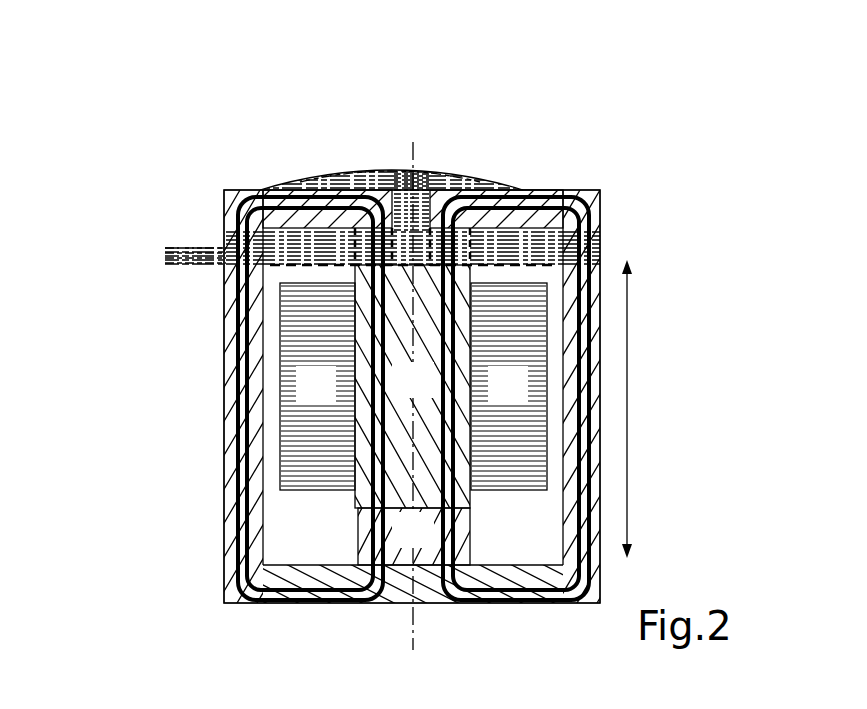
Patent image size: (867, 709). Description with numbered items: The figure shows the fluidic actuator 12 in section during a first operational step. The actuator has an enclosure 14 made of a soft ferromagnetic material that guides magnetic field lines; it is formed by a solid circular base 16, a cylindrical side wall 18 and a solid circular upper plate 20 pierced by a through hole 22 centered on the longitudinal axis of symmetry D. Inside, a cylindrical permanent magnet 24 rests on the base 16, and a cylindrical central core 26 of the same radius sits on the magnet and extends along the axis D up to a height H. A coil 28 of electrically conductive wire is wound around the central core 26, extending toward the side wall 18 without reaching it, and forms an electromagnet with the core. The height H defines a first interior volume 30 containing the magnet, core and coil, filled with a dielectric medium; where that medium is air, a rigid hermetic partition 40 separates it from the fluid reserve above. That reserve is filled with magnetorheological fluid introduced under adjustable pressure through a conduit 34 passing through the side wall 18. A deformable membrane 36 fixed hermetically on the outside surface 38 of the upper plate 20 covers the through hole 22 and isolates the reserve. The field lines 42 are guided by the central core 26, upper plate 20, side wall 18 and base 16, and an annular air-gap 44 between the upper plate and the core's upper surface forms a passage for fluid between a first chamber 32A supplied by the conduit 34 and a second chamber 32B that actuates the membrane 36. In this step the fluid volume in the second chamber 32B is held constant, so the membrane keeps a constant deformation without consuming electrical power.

The fluidic actuator 12 is at (146, 400).
The enclosure 14 is at (433, 445).
The base 16 is at (430, 587).
The side wall 18 is at (237, 350).
The upper plate 20 is at (497, 215).
The through hole 22 is at (418, 207).
The permanent magnet 24 is at (397, 543).
The central core 26 is at (397, 393).
The coil 28 is at (300, 397).
The first interior volume 30 is at (513, 527).
The first chamber 32A is at (578, 200).
The second chamber 32B is at (399, 182).
The conduit 34 is at (232, 252).
The deformable membrane 36 is at (347, 175).
The outside surface 38 is at (325, 188).
The partition 40 is at (533, 262).
The field lines 42 is at (237, 480).
The annular air-gap 44 is at (363, 250).
The longitudinal axis of symmetry D is at (412, 382).
The height H is at (640, 409).